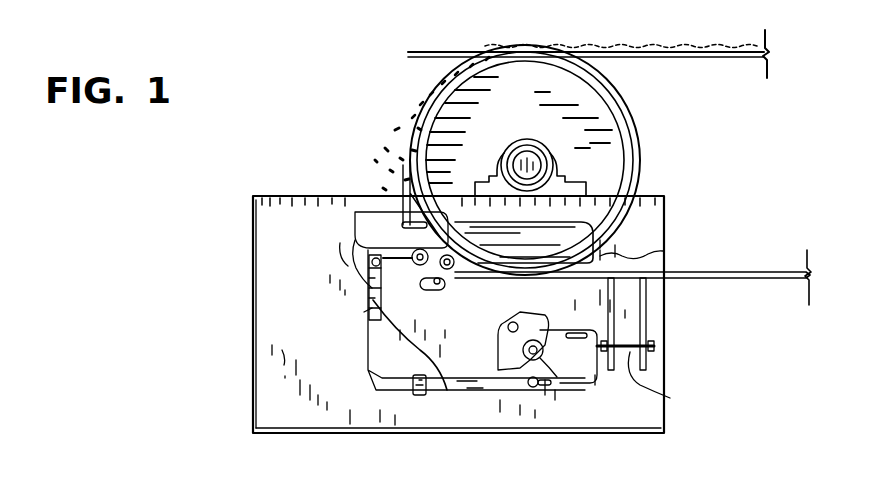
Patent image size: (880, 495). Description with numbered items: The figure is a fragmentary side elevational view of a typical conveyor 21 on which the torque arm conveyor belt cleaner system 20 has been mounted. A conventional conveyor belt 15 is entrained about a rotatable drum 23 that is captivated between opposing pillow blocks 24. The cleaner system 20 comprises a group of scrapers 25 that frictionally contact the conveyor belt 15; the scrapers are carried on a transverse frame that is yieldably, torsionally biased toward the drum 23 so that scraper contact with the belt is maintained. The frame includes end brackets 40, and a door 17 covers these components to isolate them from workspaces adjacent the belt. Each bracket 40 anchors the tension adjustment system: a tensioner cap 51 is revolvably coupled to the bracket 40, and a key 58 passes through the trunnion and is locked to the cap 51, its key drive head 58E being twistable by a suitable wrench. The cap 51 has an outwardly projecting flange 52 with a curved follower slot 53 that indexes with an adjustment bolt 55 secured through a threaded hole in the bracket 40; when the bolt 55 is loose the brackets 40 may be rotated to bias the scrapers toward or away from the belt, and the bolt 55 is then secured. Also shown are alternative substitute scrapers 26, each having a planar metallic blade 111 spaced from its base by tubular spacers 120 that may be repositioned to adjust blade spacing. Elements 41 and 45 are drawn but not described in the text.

The conveyor belt 15 is at (642, 56).
The door 17 is at (380, 363).
The torque arm conveyor belt cleaner system 20 is at (331, 235).
The conveyor 21 is at (573, 160).
The drum 23 is at (598, 72).
The pillow blocks 24 is at (549, 148).
The scrapers 25 is at (410, 193).
The substitute scrapers 26 is at (646, 320).
The end brackets 40 is at (362, 240).
The arm 41 is at (364, 255).
The rod 45 is at (364, 288).
The tensioner cap 51 is at (373, 257).
The flange 52 is at (527, 353).
The follower slot 53 is at (523, 317).
The adjustment bolt 55 is at (370, 310).
The key 58 is at (414, 252).
The key drive head 58E is at (517, 357).
The blade 111 is at (645, 292).
The tubular spacers 120 is at (668, 383).